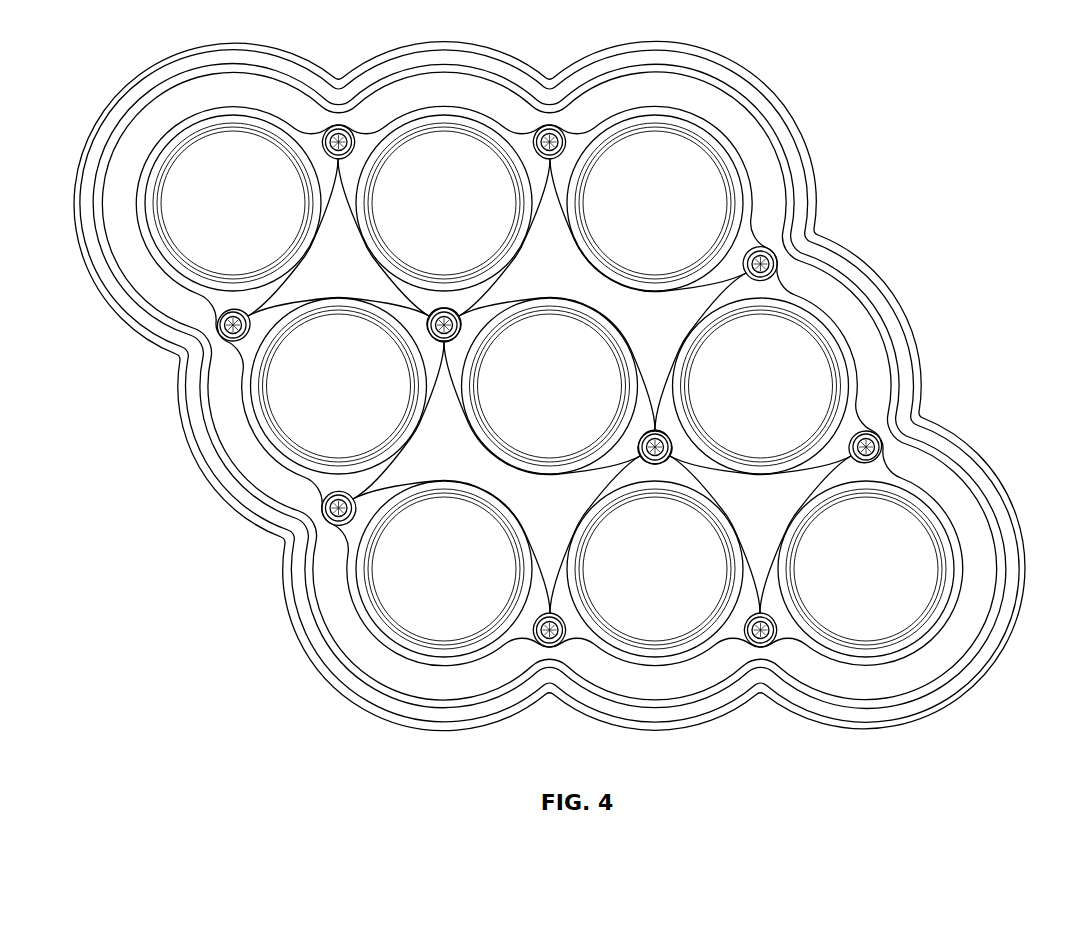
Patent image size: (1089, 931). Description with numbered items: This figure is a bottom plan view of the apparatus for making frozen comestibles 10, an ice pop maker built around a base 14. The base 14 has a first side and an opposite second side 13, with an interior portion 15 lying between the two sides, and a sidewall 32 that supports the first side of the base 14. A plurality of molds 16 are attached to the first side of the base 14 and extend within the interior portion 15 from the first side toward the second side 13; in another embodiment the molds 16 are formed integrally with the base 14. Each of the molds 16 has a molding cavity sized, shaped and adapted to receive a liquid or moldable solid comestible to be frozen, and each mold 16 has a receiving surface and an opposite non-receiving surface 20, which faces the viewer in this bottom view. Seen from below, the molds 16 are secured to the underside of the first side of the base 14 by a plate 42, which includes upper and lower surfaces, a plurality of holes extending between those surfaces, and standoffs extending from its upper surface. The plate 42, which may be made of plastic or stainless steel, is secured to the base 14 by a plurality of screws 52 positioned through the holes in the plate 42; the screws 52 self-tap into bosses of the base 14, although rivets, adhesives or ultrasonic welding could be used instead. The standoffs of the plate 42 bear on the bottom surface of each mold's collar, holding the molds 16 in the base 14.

The apparatus for making frozen comestibles 10 is at (577, 396).
The second side 13 is at (881, 735).
The base 14 is at (946, 372).
The interior portion 15 is at (826, 663).
The molds 16 is at (608, 388).
The non-receiving surface 20 is at (881, 579).
The sidewall 32 is at (999, 480).
The plate 42 is at (826, 297).
The screws 52 is at (773, 250).